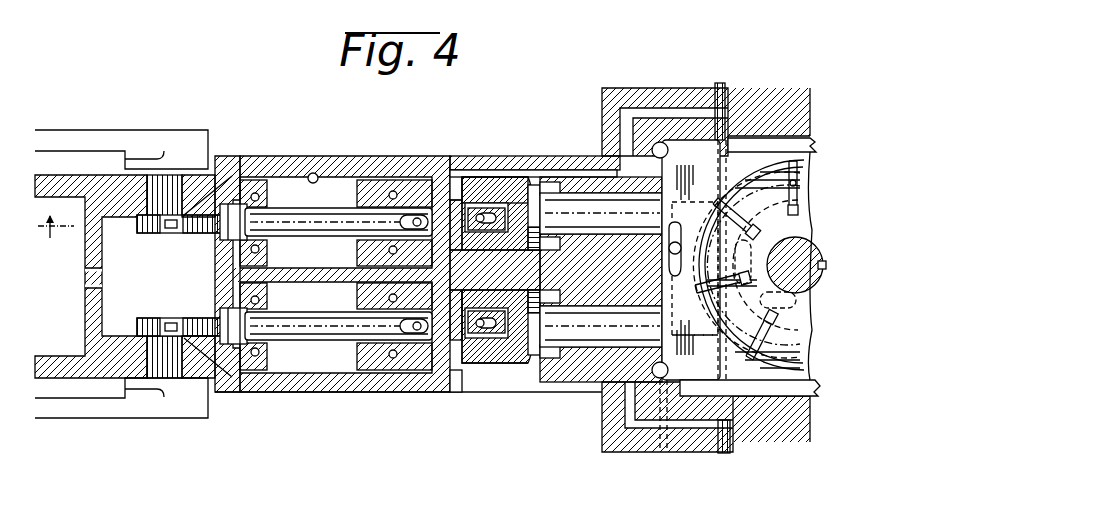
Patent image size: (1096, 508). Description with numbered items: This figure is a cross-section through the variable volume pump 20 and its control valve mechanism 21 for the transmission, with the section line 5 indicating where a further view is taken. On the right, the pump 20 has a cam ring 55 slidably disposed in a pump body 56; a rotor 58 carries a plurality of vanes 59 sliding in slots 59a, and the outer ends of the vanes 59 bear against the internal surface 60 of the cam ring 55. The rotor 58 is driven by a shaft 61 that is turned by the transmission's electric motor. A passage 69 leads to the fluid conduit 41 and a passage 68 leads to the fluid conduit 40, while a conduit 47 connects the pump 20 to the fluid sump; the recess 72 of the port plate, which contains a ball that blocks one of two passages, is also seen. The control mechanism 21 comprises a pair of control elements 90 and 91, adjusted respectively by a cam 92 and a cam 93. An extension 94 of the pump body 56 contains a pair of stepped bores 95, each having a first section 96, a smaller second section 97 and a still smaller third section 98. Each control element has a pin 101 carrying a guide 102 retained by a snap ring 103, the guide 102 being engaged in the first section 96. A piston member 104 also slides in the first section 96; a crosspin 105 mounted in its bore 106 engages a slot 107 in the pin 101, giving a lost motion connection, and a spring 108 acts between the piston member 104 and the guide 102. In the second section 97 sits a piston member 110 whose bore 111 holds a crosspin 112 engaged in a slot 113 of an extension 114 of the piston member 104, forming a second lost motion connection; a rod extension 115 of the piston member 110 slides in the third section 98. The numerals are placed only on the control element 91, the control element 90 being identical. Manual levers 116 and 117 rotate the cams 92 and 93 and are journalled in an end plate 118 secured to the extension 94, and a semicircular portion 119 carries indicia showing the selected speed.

The section line 5- 5 is at (170, 237).
The variable volume pump 20 is at (774, 438).
The control valve mechanism 21 is at (338, 420).
The fluid conduit 40 is at (722, 455).
The fluid conduit 41 is at (715, 87).
The conduit 47 is at (662, 455).
The cam ring 55 is at (812, 135).
The pump body 56 is at (760, 97).
The rotor 58 is at (790, 182).
The vanes 59 is at (702, 275).
The slots 59a is at (777, 175).
The internal surface 60 is at (710, 323).
The shaft 61 is at (795, 266).
The passage 68 is at (706, 360).
The passage 69 is at (706, 156).
The recess 72 is at (668, 278).
The control element 90 is at (407, 381).
The control element 91 is at (460, 176).
The cam 92 is at (147, 318).
The cam 93 is at (168, 238).
The extension 94 is at (377, 160).
The stepped bores 95 is at (340, 172).
The first section 96 is at (313, 173).
The second section 97 is at (503, 178).
The third section 98 is at (612, 233).
The pin 101 is at (268, 210).
The guide 102 is at (253, 180).
The snap ring 103 is at (232, 172).
The piston member 104 is at (454, 177).
The crosspin 105 is at (412, 195).
The bore 106 is at (404, 242).
The slot 107 is at (403, 219).
The spring 108 is at (250, 248).
The piston member 110 is at (532, 183).
The bore 111 is at (538, 318).
The crosspin 112 is at (487, 334).
The slot 113 is at (463, 336).
The extension 114 is at (482, 318).
The rod extension 115 is at (575, 205).
The manual lever 116 is at (117, 414).
The manual lever 117 is at (115, 130).
The end plate 118 is at (218, 393).
The semicircular portion 119 is at (55, 176).